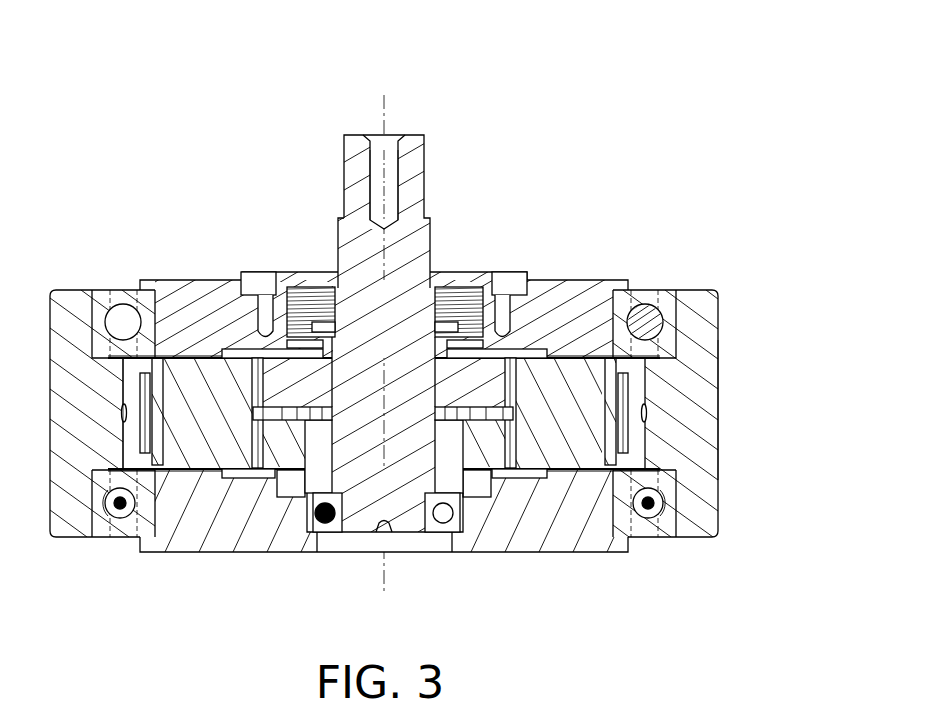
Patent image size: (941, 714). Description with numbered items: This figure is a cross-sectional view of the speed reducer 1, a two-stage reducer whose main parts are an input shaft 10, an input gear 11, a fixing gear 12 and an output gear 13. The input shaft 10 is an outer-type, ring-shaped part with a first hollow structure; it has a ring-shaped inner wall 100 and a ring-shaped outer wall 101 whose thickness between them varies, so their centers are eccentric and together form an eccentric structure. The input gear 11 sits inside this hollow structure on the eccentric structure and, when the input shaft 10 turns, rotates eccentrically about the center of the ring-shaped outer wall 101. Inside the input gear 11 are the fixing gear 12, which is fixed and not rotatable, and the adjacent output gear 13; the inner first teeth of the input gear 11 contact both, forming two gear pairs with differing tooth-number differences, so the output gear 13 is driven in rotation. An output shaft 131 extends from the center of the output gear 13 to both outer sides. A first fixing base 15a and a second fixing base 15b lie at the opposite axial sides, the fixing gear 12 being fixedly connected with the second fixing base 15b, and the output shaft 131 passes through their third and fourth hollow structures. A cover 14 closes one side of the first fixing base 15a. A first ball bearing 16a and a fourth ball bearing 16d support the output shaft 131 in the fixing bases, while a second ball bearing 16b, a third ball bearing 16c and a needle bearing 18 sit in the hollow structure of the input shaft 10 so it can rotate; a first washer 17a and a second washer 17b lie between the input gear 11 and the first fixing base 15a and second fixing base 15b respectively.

The speed reducer 1 is at (905, 67).
The input shaft 10 is at (696, 322).
The ring-shaped inner wall 100 is at (640, 390).
The ring-shaped outer wall 101 is at (720, 413).
The input gear 11 is at (548, 528).
The fixing gear 12 is at (262, 537).
The output gear 13 is at (190, 302).
The output shaft 131 is at (432, 243).
The cover 14 is at (294, 300).
The first fixing base 15a is at (584, 355).
The second fixing base 15b is at (597, 515).
The first ball bearing 16a is at (258, 292).
The second ball bearing 16b is at (124, 320).
The third ball bearing 16c is at (662, 503).
The fourth ball bearing 16d is at (322, 522).
The first washer 17a is at (528, 352).
The second washer 17b is at (484, 525).
The needle bearing 18 is at (632, 452).